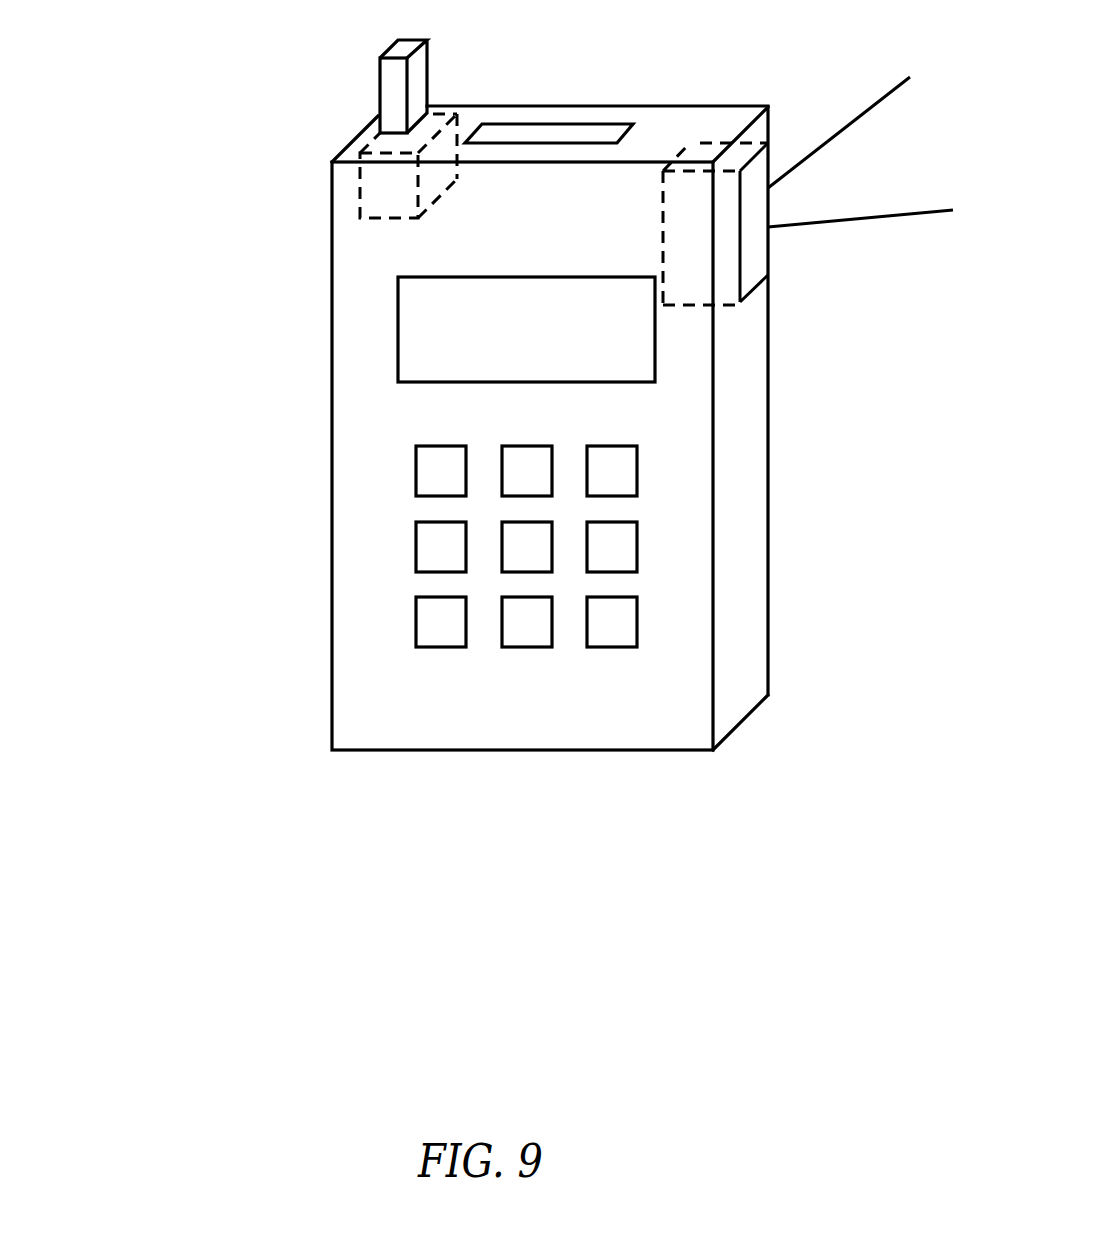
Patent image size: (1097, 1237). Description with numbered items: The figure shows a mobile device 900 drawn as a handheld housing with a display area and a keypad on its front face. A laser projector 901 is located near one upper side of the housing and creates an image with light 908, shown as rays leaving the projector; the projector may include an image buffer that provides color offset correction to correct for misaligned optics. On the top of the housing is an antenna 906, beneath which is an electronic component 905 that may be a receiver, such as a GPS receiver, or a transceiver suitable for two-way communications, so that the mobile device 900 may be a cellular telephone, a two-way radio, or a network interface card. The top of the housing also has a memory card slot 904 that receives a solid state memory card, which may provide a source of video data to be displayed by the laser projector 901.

The mobile device 900 is at (170, 798).
The laser projector 901 is at (770, 264).
The memory card slot 904 is at (623, 135).
The electronic component 905 is at (445, 190).
The antenna 906 is at (380, 80).
The light 908 is at (860, 152).